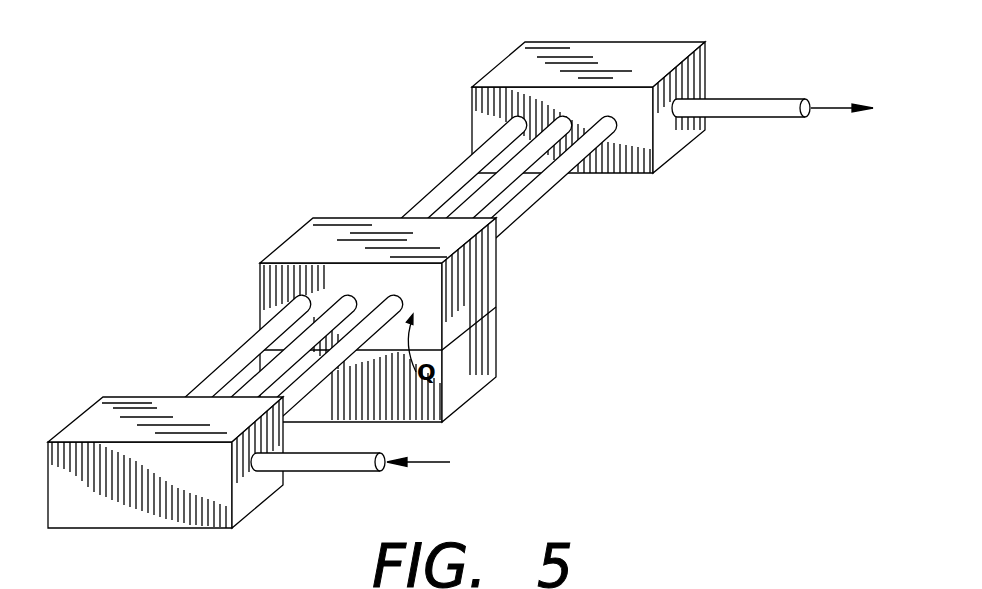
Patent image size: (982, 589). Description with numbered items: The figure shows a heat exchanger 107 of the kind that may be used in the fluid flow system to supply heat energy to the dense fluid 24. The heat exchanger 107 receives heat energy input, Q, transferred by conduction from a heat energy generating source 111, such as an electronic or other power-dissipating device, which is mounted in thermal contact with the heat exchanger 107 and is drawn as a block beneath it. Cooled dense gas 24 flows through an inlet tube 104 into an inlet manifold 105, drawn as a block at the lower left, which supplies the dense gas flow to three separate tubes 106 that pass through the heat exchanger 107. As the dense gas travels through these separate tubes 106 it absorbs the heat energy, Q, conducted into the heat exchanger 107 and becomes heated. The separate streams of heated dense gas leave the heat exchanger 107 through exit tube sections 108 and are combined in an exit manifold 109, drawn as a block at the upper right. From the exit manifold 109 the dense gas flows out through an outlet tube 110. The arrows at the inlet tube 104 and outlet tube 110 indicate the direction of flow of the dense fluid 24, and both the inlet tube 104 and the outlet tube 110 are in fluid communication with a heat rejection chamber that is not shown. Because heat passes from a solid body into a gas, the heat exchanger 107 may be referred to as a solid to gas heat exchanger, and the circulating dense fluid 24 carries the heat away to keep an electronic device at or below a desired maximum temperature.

The dense fluid 24 is at (825, 108).
The inlet tube 104 is at (310, 468).
The inlet manifold 105 is at (122, 410).
The separate tubes 106 is at (243, 355).
The heat exchanger 107 is at (480, 300).
The exit tube sections 108 is at (533, 197).
The exit manifold 109 is at (595, 55).
The outlet tube 110 is at (728, 103).
The heat energy generating source 111 is at (483, 375).